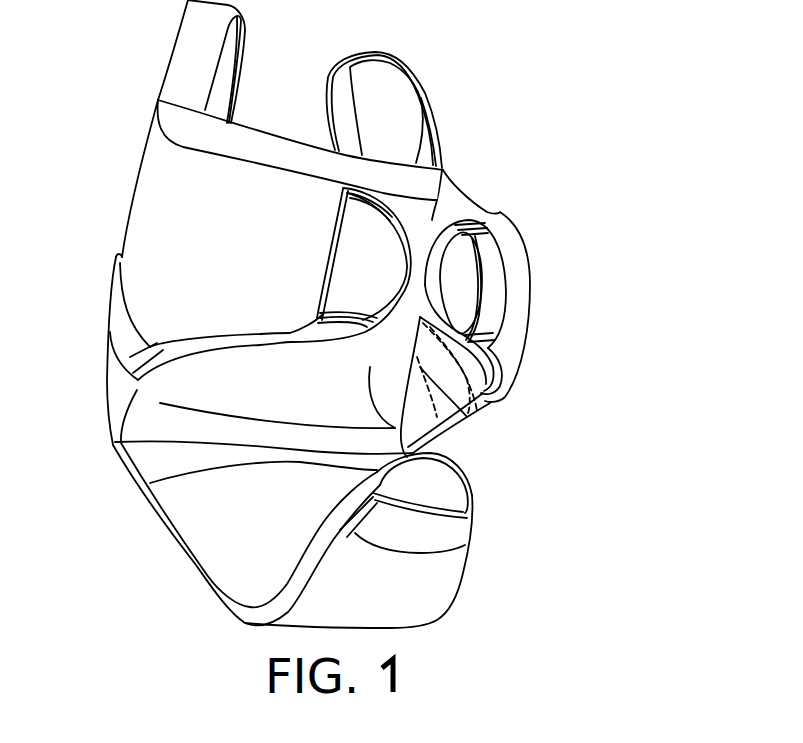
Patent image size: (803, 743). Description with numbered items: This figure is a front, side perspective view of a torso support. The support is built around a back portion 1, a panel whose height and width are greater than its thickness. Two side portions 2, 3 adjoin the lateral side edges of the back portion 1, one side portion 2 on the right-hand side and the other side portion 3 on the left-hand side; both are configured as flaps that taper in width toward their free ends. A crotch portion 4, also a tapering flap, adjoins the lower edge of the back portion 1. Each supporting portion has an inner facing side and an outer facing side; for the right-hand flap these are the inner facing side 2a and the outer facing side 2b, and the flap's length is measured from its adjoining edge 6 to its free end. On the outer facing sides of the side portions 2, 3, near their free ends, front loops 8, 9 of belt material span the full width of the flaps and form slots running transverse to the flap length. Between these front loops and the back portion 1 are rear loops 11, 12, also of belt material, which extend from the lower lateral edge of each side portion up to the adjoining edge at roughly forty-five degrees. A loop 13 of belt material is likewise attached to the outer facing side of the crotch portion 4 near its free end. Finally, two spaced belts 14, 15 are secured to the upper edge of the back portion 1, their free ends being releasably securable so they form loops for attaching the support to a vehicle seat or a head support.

The back portion 1 is at (418, 420).
The side portion 2 is at (516, 305).
The inner facing side 2a is at (490, 402).
The outer facing side 2b is at (510, 337).
The side portion 3 is at (192, 192).
The crotch portion 4 is at (420, 587).
The adjoining edge 6 is at (462, 412).
The front loop 8 is at (485, 260).
The front loop 9 is at (353, 265).
The rear loop 11 is at (455, 424).
The rear loop 12 is at (120, 339).
The loop 13 is at (435, 529).
The belt 14 is at (433, 141).
The belt 15 is at (190, 37).